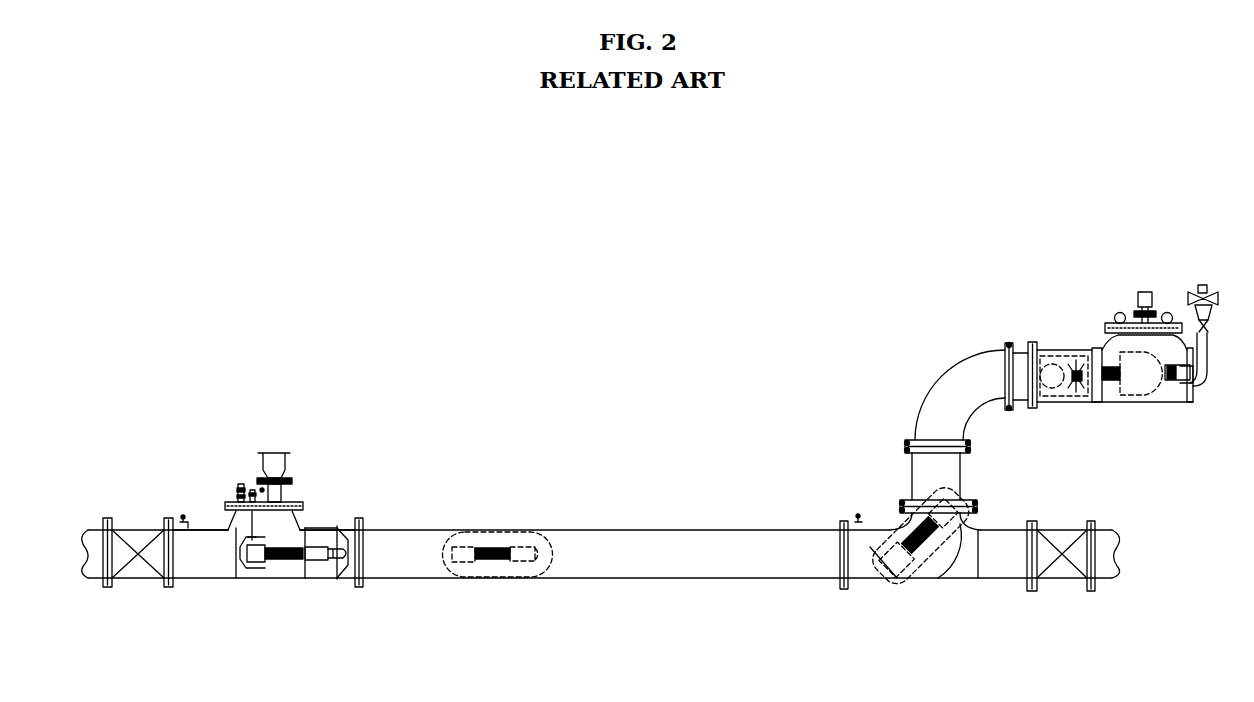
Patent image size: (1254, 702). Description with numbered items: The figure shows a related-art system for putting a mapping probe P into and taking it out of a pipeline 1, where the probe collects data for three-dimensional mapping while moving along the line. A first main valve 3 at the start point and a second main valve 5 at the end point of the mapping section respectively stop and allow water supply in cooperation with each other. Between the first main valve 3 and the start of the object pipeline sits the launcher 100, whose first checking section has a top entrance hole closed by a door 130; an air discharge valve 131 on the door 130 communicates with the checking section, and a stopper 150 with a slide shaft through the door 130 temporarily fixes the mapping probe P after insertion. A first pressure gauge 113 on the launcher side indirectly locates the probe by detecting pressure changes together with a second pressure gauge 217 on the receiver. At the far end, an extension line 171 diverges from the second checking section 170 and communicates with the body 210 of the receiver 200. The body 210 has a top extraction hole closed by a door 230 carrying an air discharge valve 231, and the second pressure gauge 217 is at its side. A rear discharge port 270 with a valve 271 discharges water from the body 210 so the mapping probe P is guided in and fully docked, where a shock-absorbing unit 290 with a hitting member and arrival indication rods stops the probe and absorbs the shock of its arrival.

The pipeline 1 is at (636, 530).
The first main valve 3 is at (145, 568).
The second main valve 5 is at (1058, 556).
The mapping probe P is at (318, 567).
The launcher 100 is at (273, 449).
The first pressure gauge 113 is at (183, 520).
The door 130 is at (300, 502).
The air discharge valve 131 is at (288, 456).
The stopper 150 is at (230, 478).
The second checking section 170 is at (957, 580).
The extension line 171 is at (933, 390).
The receiver 200 is at (1122, 351).
The body 210 is at (1115, 403).
The second pressure gauge 217 is at (1058, 348).
The door 230 is at (1105, 325).
The air discharge valve 231 is at (1148, 290).
The rear discharge port 270 is at (1210, 355).
The valve 271 is at (1209, 325).
The shock-absorbing unit 290 is at (1172, 394).